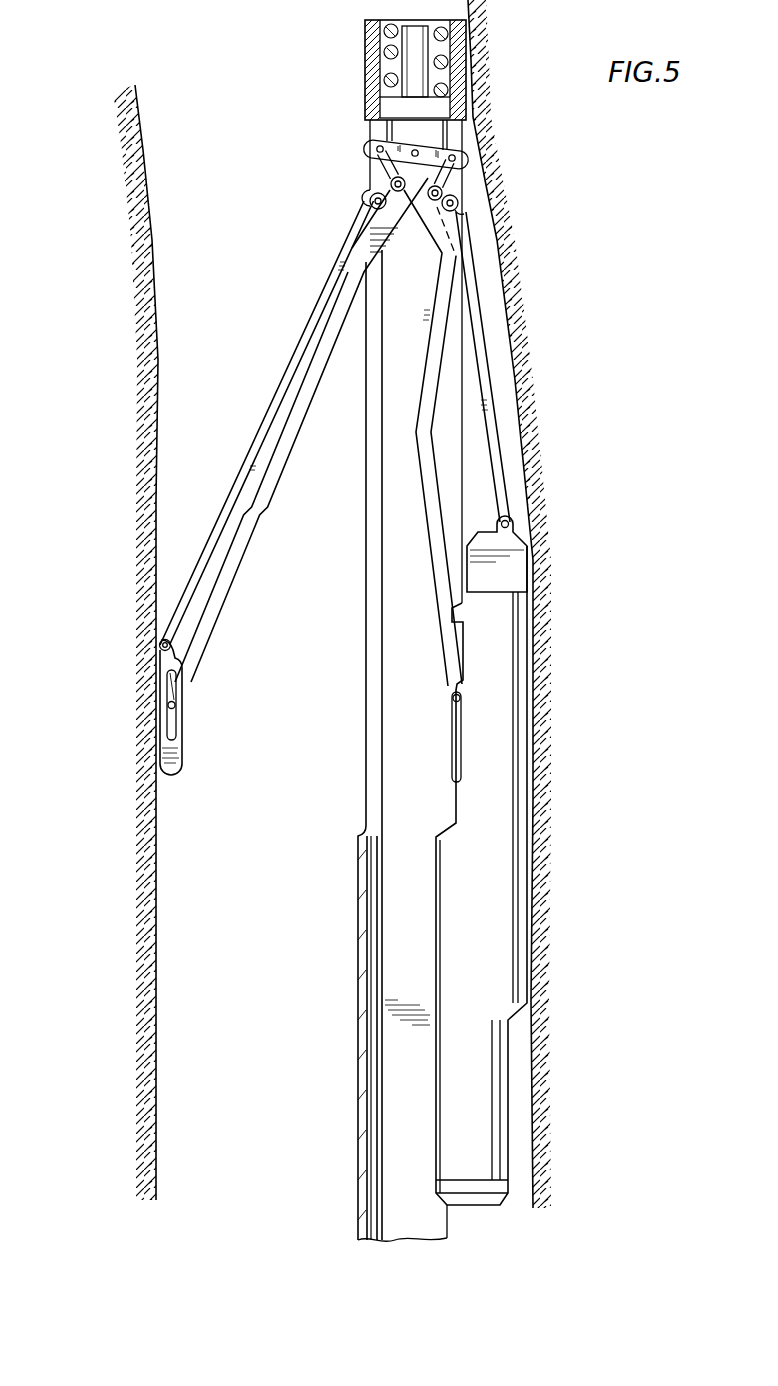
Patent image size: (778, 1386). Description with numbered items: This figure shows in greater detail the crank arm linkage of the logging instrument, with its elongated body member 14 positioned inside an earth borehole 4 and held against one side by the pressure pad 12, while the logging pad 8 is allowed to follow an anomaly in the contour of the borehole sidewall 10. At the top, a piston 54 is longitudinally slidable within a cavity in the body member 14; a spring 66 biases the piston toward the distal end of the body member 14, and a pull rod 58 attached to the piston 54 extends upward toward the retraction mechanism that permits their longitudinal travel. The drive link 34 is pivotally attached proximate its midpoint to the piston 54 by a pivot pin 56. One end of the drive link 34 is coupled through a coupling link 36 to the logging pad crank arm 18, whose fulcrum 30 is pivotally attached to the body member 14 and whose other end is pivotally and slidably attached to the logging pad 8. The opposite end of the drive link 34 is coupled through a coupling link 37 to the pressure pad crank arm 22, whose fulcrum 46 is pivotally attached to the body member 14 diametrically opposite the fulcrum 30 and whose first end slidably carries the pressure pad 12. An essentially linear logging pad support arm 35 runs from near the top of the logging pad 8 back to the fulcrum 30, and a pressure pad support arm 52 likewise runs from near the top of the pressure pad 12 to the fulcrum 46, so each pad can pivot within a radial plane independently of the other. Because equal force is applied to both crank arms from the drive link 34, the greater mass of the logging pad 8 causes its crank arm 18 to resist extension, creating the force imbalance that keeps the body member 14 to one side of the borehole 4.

The earth borehole 4 is at (190, 1002).
The logging pad 8 is at (500, 783).
The borehole sidewall 10 is at (545, 512).
The pressure pad 12 is at (158, 746).
The body member 14 is at (358, 878).
The logging pad crank arm 18 is at (437, 480).
The pressure pad crank arm 22 is at (252, 482).
The fulcrum 30 is at (456, 212).
The drive link 34 is at (448, 148).
The logging pad support arm 35 is at (490, 368).
The coupling link 36 is at (384, 173).
The coupling link 37 is at (450, 184).
The fulcrum 46 is at (369, 201).
The pressure pad support arm 52 is at (286, 368).
The piston 54 is at (470, 118).
The pivot pin 56 is at (412, 137).
The pull rod 58 is at (383, 80).
The spring 66 is at (462, 57).